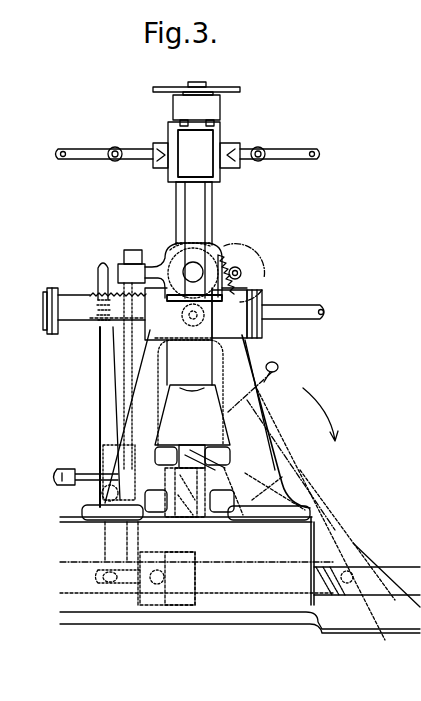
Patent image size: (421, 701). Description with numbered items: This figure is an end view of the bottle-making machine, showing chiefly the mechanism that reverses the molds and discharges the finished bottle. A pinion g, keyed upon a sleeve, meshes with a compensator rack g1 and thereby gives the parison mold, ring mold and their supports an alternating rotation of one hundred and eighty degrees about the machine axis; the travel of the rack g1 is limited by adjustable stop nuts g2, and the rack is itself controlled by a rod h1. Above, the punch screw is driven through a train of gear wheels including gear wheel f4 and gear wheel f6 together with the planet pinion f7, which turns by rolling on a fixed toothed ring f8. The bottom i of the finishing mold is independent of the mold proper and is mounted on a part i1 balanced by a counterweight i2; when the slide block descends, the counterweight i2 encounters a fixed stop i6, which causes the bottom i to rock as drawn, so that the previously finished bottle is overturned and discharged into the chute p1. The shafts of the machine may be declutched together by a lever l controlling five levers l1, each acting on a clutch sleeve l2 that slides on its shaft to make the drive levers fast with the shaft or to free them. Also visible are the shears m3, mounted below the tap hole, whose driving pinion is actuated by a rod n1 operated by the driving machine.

The shears m3 is at (218, 91).
The rod n1 is at (284, 165).
The pinion g is at (223, 252).
The fixed toothed ring f8 is at (233, 258).
The gear wheel f6 is at (262, 272).
The planet pinion f7 is at (242, 277).
The stop nuts g2 is at (272, 344).
The compensator rack g1 is at (99, 299).
The gear wheel f4 is at (182, 318).
The rod h1 is at (305, 312).
The lever l is at (107, 386).
The counterweight i2 is at (178, 448).
The bottom of the finishing mold i is at (212, 450).
The fixed stop i6 is at (166, 525).
The levers l1 is at (104, 546).
The clutch sleeves l2 is at (149, 556).
The part i1 is at (242, 517).
The chute p1 is at (370, 614).